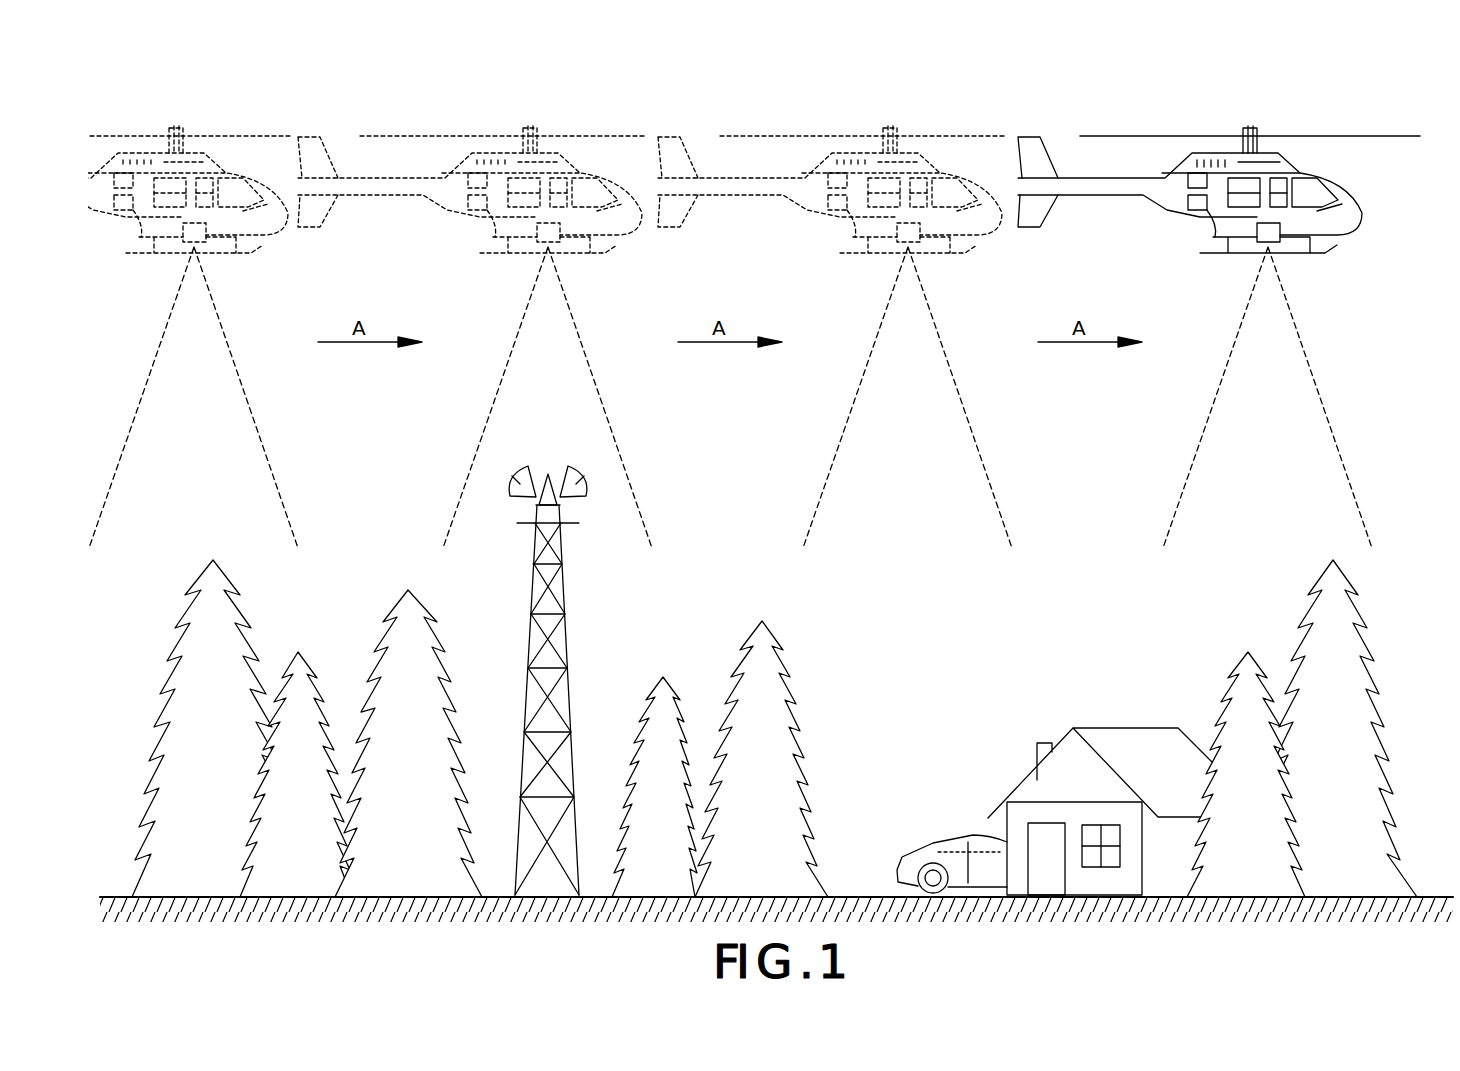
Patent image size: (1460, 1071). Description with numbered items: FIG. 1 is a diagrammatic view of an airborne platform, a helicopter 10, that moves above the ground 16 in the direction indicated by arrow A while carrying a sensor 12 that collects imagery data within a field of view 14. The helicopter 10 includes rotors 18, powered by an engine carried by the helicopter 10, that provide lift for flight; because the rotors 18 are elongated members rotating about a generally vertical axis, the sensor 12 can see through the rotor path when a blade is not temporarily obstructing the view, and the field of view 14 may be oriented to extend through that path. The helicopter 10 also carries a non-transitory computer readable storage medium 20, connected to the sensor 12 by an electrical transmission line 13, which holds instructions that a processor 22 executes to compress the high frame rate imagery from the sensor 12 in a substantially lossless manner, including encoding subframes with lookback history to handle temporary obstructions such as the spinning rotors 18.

The helicopter 10 is at (1234, 217).
The sensor 12 is at (1280, 238).
The electrical transmission line 13 is at (1215, 237).
The field of view 14 is at (1310, 368).
The ground 16 is at (868, 893).
The rotors 18 is at (1380, 137).
The non-transitory computer readable storage medium 20 is at (1188, 203).
The processor 22 is at (1188, 180).